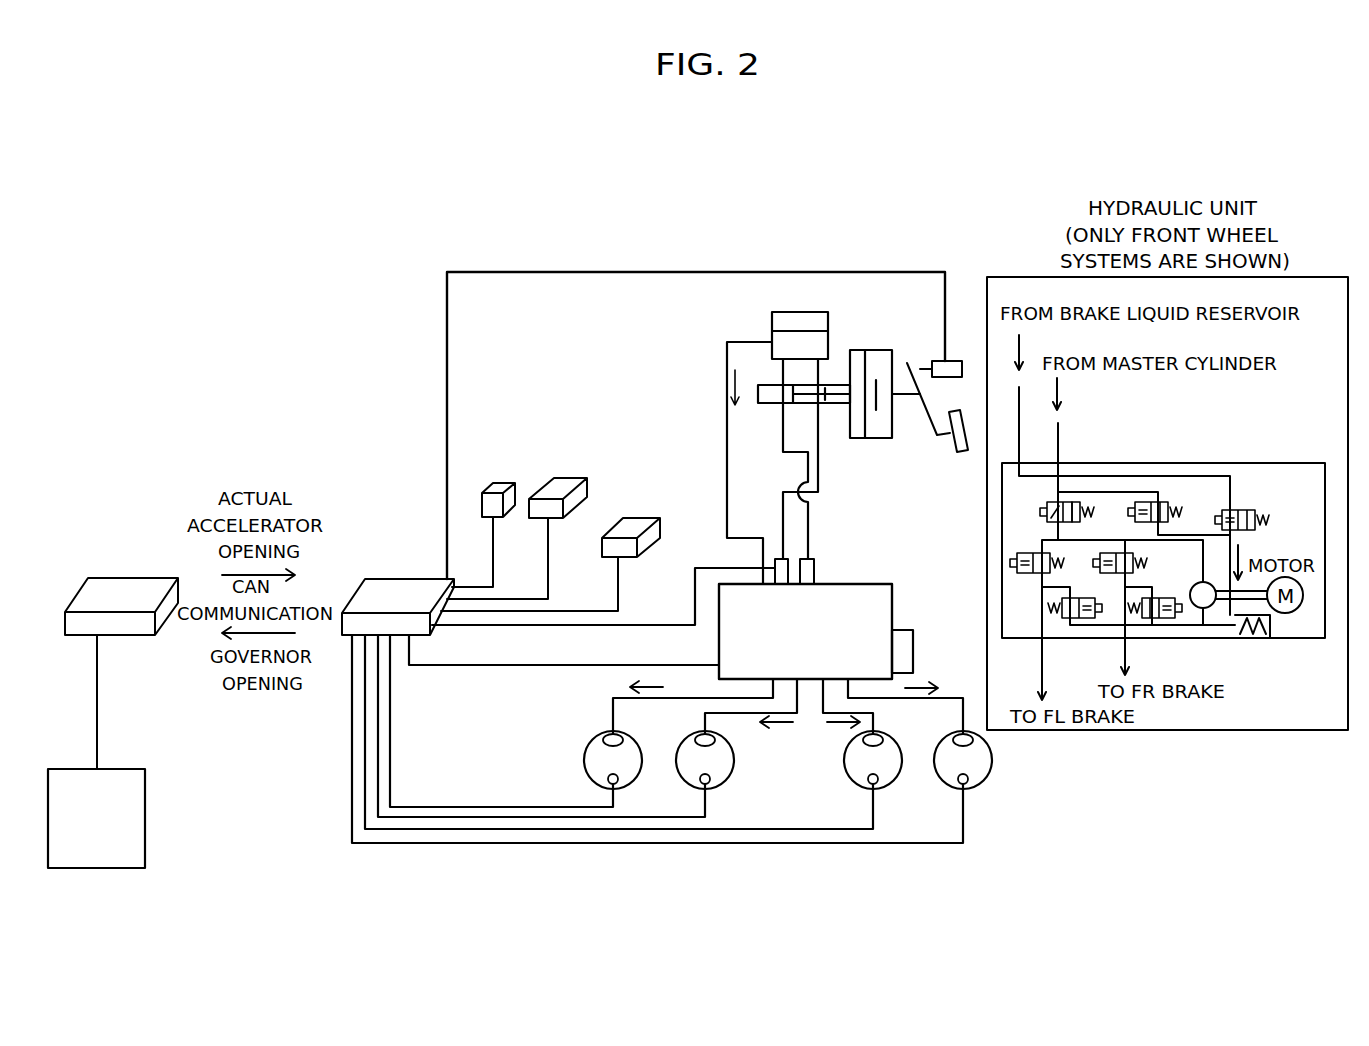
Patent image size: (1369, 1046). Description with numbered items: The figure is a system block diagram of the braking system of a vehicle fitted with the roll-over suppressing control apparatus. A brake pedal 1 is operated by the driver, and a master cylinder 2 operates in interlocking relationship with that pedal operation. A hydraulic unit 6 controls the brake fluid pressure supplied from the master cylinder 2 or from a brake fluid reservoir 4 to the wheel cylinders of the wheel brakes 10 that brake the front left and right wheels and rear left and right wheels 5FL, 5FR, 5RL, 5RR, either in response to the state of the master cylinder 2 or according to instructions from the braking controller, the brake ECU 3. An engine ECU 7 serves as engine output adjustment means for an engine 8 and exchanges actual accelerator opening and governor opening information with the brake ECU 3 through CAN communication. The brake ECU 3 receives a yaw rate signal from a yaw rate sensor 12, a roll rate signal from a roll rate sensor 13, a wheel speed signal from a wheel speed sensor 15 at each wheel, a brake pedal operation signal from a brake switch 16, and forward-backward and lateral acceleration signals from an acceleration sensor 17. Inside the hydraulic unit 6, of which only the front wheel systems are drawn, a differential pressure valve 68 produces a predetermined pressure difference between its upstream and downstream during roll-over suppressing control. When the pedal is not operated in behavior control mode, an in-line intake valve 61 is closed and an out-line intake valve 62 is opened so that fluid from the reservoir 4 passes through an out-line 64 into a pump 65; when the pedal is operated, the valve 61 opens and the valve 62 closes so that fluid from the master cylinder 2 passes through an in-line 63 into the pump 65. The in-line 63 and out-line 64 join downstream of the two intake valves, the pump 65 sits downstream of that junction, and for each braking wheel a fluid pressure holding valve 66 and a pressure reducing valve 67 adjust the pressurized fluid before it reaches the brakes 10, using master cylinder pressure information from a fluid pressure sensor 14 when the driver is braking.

The brake pedal 1 is at (960, 453).
The master cylinder 2 is at (830, 405).
The braking controller (brake ECU) 3 is at (432, 632).
The brake fluid reservoir 4 is at (772, 318).
The hydraulic unit 6 is at (875, 583).
The engine ECU 7 is at (122, 635).
The engine 8 is at (145, 823).
The wheel brakes 10 is at (607, 737).
The yaw rate sensor 12 is at (565, 487).
The roll rate sensor 13 is at (636, 524).
The fluid pressure sensor 14 is at (810, 568).
The wheel speed sensor 15 is at (607, 782).
The brake switch 16 is at (952, 360).
The forward-backward and lateral acceleration sensor 17 is at (500, 490).
The front left wheel 5FL is at (567, 763).
The front right wheel 5FR is at (748, 774).
The rear left wheel 5RL is at (841, 785).
The rear right wheel 5RR is at (993, 791).
The in-line intake valve 61 is at (1147, 500).
The out-line intake valve 62 is at (1243, 507).
The in-line 63 is at (788, 453).
The out-line 64 is at (725, 367).
The pump 65 is at (1197, 625).
The fluid pressure holding valve 66 is at (1103, 640).
The pressure reducing valve 67 is at (1163, 642).
The differential pressure valve 68 is at (1072, 500).